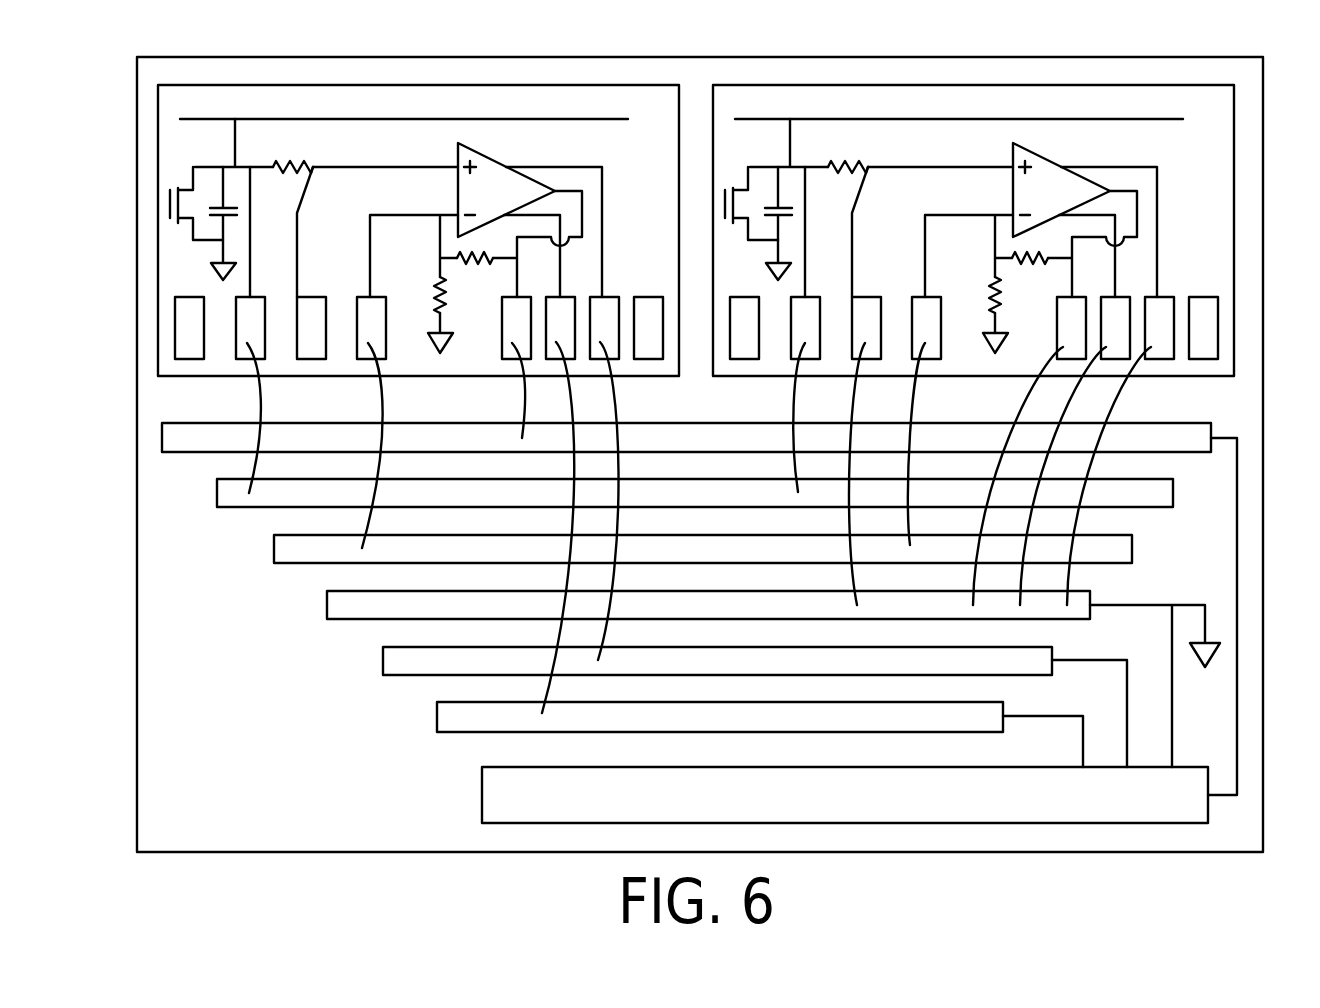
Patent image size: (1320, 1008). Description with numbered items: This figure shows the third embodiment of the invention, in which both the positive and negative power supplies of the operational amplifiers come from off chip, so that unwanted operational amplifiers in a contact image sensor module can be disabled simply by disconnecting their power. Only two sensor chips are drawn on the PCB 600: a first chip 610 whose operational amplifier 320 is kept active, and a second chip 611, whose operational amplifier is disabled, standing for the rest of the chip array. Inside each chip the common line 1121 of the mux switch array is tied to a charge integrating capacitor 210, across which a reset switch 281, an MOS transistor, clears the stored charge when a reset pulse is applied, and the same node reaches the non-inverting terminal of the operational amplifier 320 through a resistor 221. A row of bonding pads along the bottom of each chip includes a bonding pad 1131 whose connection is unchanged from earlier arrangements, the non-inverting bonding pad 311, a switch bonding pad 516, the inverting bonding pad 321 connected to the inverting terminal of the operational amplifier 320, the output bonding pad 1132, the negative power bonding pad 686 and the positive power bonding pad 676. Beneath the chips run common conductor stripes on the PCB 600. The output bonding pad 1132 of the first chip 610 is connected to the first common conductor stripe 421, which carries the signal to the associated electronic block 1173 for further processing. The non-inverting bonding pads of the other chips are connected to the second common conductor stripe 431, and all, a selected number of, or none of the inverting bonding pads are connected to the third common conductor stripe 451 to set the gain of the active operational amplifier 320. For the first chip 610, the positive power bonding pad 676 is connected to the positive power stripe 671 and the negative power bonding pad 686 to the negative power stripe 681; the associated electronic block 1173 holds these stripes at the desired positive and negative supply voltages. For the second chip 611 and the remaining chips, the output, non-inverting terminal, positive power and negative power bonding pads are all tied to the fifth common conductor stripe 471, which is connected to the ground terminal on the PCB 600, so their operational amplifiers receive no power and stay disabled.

The PCB 600 is at (138, 722).
The first chip 610 is at (174, 377).
The second chip 611 is at (1205, 376).
The common line 1121 is at (190, 119).
The charge integrating capacitor 210 is at (213, 205).
The reset switch 281 is at (170, 203).
The resistor 221 is at (300, 165).
The operational amplifier 320 is at (483, 153).
The non-inverting bonding pad 311 is at (259, 295).
The switch bonding pad 516 is at (313, 295).
The bonding pad 1131 is at (175, 325).
The inverting bonding pad 321 is at (357, 348).
The output bonding pad 1132 is at (502, 350).
The negative power bonding pad 686 is at (612, 297).
The positive power bonding pad 676 is at (648, 360).
The first common conductor stripe 421 is at (177, 453).
The second common conductor stripe 431 is at (232, 508).
The third common conductor stripe 451 is at (288, 564).
The fifth common conductor stripe 471 is at (342, 620).
The positive power stripe 671 is at (397, 677).
The negative power stripe 681 is at (445, 732).
The associated electronic block 1173 is at (510, 823).